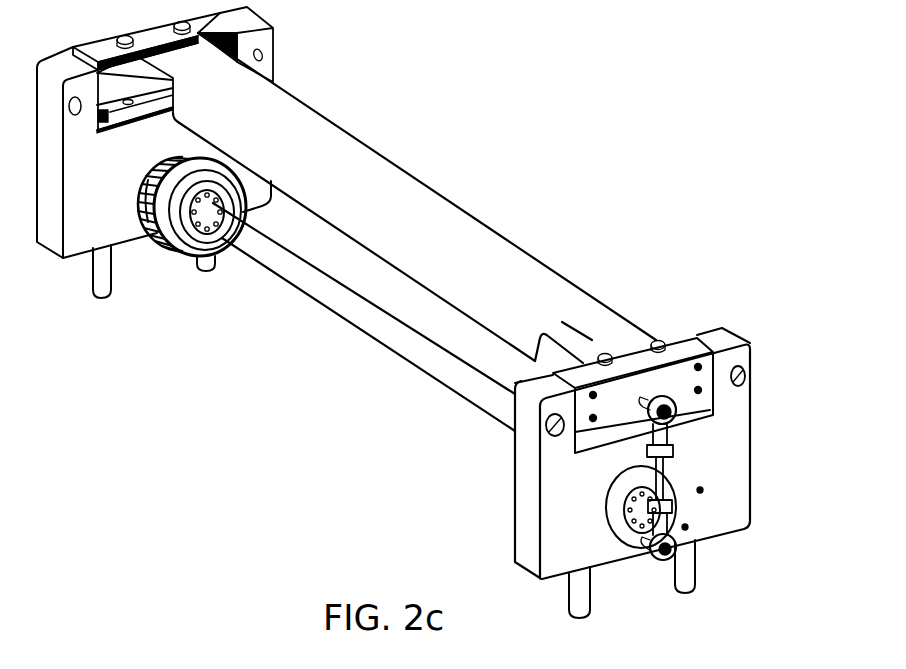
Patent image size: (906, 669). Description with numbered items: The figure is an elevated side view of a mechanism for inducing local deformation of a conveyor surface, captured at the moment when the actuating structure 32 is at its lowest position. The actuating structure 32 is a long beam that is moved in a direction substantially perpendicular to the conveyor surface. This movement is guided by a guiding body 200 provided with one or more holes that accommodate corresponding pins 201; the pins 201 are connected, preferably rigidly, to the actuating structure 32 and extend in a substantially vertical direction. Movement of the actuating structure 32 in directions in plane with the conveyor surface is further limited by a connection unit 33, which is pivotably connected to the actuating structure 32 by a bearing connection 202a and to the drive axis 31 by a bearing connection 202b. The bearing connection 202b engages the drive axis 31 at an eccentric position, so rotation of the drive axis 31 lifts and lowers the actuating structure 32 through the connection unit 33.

The actuating structure 32 is at (412, 208).
The drive axis 31 is at (350, 323).
The guiding body 200 is at (520, 474).
The pins 201 is at (577, 588).
The bearing connection 202a is at (661, 397).
The connection unit 33 is at (658, 477).
The bearing connection 202b is at (663, 560).